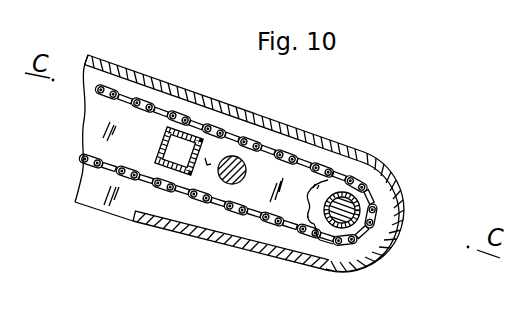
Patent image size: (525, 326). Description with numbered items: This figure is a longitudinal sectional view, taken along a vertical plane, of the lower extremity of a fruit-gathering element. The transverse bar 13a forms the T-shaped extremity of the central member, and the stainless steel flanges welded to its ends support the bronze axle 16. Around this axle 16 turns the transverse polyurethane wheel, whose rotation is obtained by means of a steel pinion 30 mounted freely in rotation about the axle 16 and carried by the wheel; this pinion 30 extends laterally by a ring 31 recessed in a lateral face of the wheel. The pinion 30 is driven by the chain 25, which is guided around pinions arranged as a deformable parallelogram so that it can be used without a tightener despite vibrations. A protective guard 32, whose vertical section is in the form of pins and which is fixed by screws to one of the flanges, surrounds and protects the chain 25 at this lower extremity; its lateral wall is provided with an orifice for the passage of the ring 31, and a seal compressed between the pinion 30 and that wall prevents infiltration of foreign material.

The transverse bar 13a is at (159, 148).
The bronze axle 16 is at (372, 227).
The chain 25 is at (262, 142).
The pinion 30 is at (322, 240).
The ring 31 is at (355, 192).
The protective guard 32 is at (400, 190).